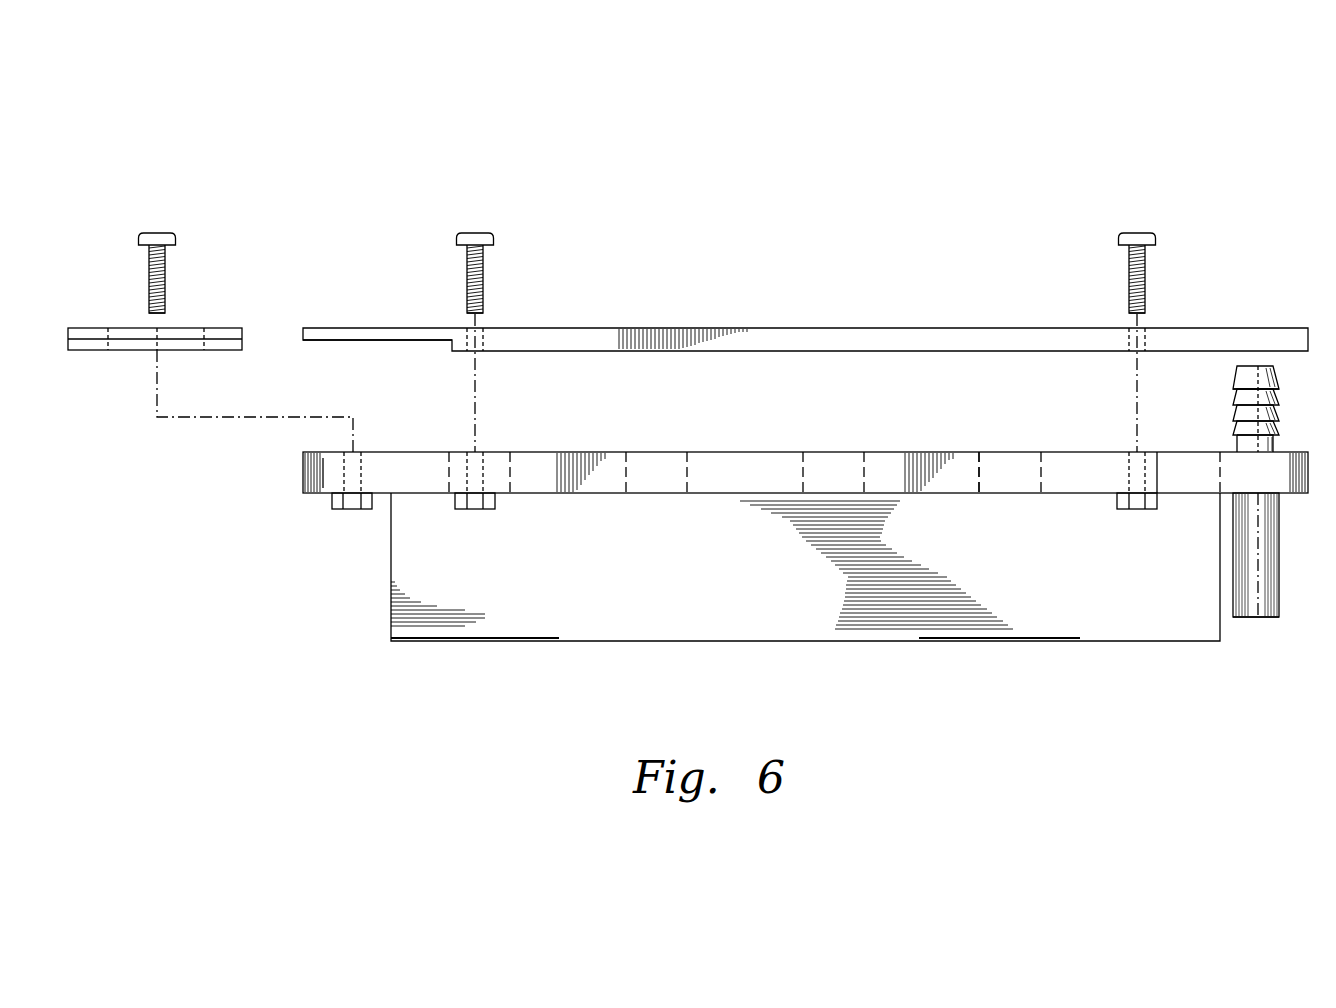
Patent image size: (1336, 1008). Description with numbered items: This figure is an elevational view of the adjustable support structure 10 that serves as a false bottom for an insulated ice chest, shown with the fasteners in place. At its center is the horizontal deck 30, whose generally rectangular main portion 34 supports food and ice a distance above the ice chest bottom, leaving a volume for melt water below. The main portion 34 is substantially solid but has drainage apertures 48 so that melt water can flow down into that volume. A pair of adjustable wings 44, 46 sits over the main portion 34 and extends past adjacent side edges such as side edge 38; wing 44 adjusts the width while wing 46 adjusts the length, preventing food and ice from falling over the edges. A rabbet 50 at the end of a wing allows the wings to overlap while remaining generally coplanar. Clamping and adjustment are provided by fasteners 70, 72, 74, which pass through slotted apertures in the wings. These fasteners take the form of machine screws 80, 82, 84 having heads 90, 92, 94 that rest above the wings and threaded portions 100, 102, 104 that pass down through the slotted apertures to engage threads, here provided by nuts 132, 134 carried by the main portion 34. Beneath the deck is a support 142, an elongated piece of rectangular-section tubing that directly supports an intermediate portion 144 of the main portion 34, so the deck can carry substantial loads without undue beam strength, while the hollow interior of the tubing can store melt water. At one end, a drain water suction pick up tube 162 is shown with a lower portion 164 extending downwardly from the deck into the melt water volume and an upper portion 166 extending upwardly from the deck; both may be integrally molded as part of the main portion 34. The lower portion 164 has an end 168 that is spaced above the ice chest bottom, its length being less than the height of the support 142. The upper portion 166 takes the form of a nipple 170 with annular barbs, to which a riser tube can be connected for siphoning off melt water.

The adjustable support structure 10 is at (1259, 226).
The horizontal deck 30 is at (1164, 516).
The main portion 34 is at (805, 588).
The side edge 38 is at (805, 494).
The adjustable wing 44 is at (805, 318).
The adjustable wing 46 is at (95, 328).
The drainage apertures 48 is at (981, 474).
The rabbet 50 is at (333, 340).
The fastener 70 is at (1121, 297).
The fastener 72 is at (479, 319).
The fastener 74 is at (190, 254).
The machine screw 80 is at (1078, 279).
The machine screw 82 is at (427, 279).
The machine screw 84 is at (205, 279).
The head 90 is at (1115, 211).
The head 92 is at (443, 221).
The head 94 is at (180, 220).
The threaded portion 100 is at (1180, 295).
The threaded portion 102 is at (526, 300).
The threaded portion 104 is at (117, 269).
The nut 132 is at (478, 510).
The nut 134 is at (352, 510).
The support 142 is at (735, 637).
The intermediate portion 144 is at (758, 340).
The drain water suction pick up tube 162 is at (1163, 575).
The lower portion 164 is at (1265, 597).
The upper portion 166 is at (1233, 377).
The end 168 is at (1245, 617).
The nipple 170 is at (1233, 400).